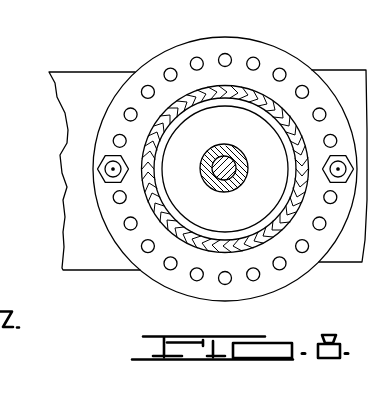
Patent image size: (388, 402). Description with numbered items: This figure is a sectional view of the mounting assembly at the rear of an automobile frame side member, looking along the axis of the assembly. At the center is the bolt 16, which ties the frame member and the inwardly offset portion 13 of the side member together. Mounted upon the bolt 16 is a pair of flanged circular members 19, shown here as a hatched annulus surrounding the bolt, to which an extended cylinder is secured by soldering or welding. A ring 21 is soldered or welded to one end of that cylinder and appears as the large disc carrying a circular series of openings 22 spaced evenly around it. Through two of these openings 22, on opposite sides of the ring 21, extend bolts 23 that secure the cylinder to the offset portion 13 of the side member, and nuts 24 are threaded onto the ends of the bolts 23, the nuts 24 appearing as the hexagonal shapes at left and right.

The offset portion 13 is at (67, 248).
The bolt 16 is at (232, 154).
The flanged circular members 19 is at (213, 131).
The ring 21 is at (274, 55).
The openings 22 is at (221, 57).
The bolts 23 is at (101, 181).
The nuts 24 is at (113, 170).